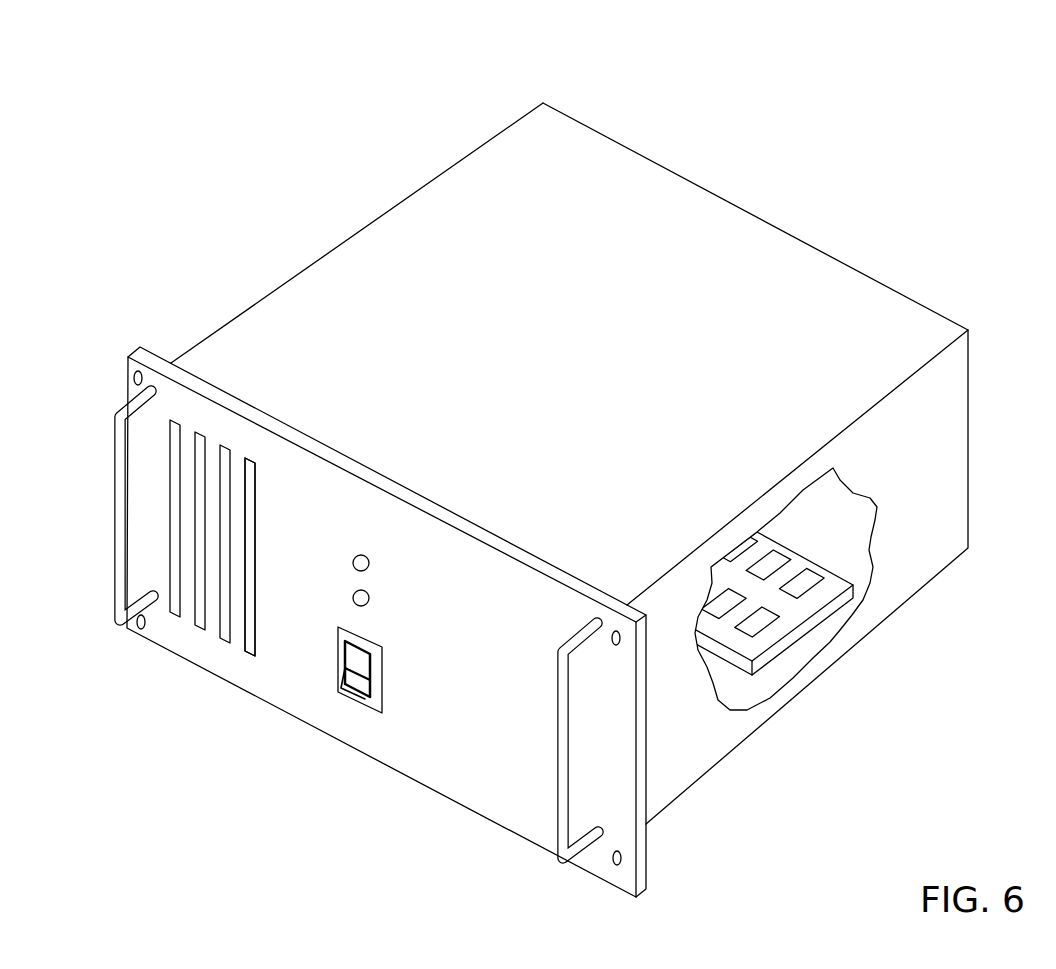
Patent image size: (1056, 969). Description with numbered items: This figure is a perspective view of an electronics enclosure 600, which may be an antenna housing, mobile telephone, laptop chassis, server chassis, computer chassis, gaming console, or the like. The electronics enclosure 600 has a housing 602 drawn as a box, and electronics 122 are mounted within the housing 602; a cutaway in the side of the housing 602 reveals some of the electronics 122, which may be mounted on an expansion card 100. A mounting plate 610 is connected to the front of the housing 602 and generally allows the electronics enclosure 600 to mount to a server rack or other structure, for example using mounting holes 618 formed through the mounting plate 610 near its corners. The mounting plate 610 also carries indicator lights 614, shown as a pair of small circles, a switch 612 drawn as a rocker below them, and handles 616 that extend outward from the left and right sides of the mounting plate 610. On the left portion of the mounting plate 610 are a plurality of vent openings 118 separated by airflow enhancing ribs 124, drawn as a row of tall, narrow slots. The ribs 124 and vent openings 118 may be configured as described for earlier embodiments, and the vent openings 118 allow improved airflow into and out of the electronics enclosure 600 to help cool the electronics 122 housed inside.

The electronics enclosure 600 is at (315, 163).
The housing 602 is at (645, 157).
The mounting plate 610 is at (383, 644).
The switch 612 is at (383, 677).
The indicator lights 614 is at (368, 563).
The handle 616 is at (557, 745).
The mounting holes 618 is at (612, 857).
The expansion card 100 is at (798, 615).
The vent openings 118 is at (257, 503).
The electronics 122 is at (803, 555).
The airflow enhancing ribs 124 is at (237, 477).